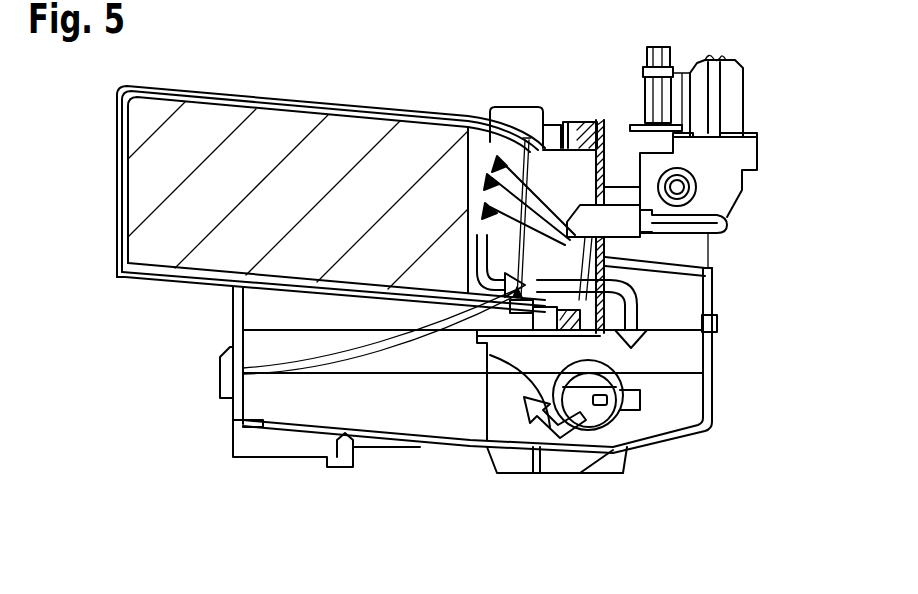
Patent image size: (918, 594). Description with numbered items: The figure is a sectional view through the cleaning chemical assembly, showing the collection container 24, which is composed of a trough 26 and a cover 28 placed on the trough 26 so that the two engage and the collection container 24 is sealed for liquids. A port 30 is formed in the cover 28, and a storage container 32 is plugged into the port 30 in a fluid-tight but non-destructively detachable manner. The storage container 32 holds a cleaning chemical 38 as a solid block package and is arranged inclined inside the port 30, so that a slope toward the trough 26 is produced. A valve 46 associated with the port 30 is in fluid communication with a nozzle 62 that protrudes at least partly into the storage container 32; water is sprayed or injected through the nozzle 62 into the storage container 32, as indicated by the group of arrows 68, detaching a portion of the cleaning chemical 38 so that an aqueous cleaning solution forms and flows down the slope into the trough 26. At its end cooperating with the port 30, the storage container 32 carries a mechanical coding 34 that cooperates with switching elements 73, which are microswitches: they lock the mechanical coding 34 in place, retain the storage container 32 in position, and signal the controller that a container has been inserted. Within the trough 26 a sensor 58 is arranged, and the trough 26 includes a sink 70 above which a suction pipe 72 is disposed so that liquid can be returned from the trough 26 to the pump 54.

The collection container 24 is at (727, 324).
The trough 26 is at (713, 346).
The cover 28 is at (710, 258).
The port 30 is at (522, 118).
The storage container 32 is at (326, 105).
The mechanical coding 34 is at (520, 296).
The cleaning chemical 38 is at (188, 115).
The valve 46 is at (733, 158).
The pump 54 is at (272, 437).
The sensor 58 is at (617, 407).
The nozzle 62 is at (617, 222).
The group of arrows 68 is at (572, 166).
The sink 70 is at (560, 458).
The suction pipe 72 is at (507, 393).
The switching elements 73 is at (243, 370).